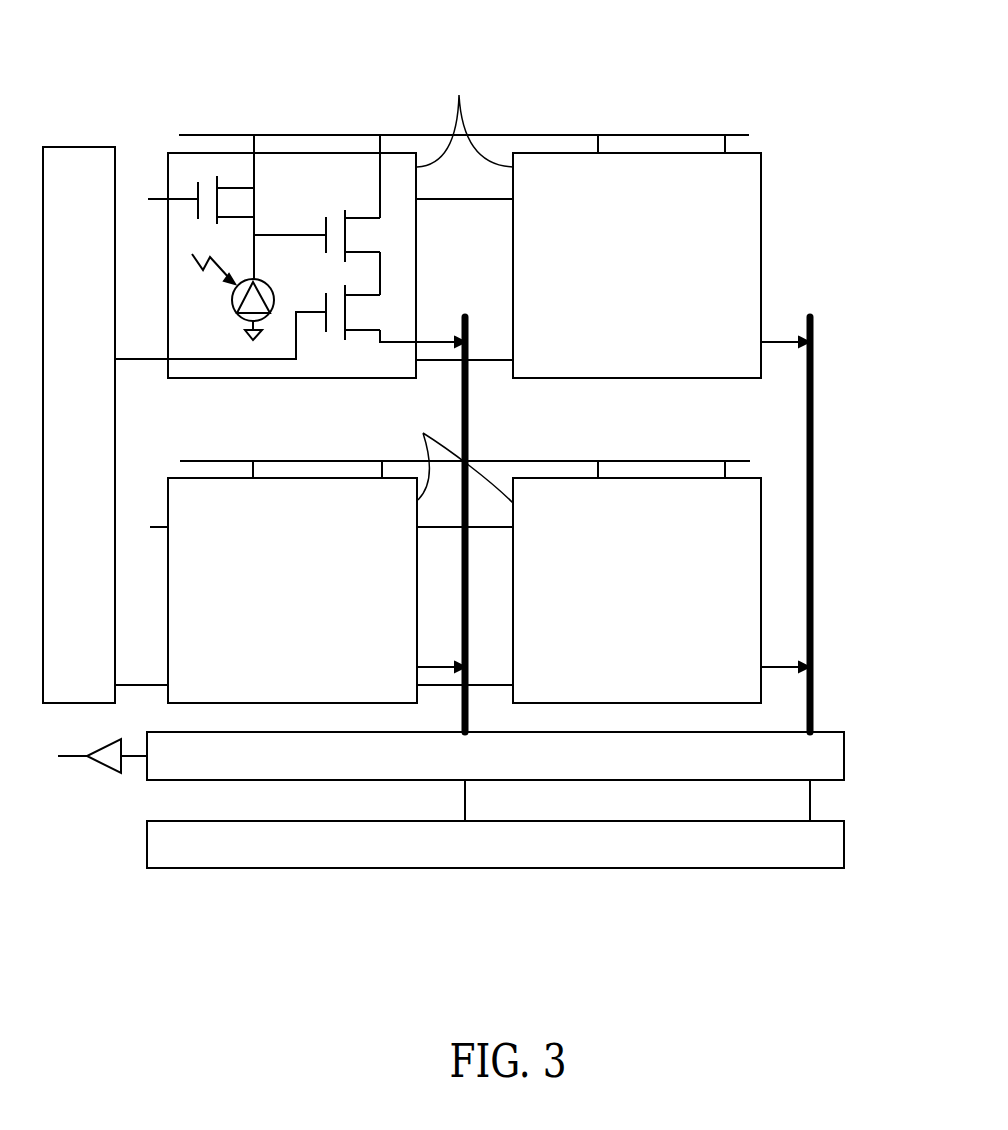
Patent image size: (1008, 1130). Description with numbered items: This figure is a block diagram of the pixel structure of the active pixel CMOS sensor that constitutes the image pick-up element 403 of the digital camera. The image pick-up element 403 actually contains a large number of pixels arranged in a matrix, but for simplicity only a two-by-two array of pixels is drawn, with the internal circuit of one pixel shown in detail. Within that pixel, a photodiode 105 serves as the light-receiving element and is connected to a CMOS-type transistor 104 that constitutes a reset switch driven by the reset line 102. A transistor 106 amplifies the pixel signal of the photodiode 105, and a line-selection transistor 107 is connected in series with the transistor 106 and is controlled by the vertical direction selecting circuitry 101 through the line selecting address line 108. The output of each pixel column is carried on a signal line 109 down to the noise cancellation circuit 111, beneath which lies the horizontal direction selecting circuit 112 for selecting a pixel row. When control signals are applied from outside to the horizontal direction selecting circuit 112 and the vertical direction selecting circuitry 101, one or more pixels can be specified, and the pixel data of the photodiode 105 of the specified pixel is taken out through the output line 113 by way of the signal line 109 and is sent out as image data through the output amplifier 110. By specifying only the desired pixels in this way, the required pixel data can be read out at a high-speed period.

The image pick-up element 403 is at (170, 87).
The vertical direction selecting circuitry 101 is at (75, 147).
The reset line 102 is at (157, 186).
The transistor 104 is at (240, 207).
The photodiode 105 is at (273, 294).
The transistor 106 is at (333, 215).
The line-selection transistor 107 is at (371, 313).
The line selecting address line 108 is at (220, 335).
The signal line 109 is at (469, 335).
The output amplifier 110 is at (99, 750).
The noise cancellation circuit 111 is at (845, 757).
The horizontal direction selecting circuit 112 is at (845, 845).
The output line 113 is at (136, 760).